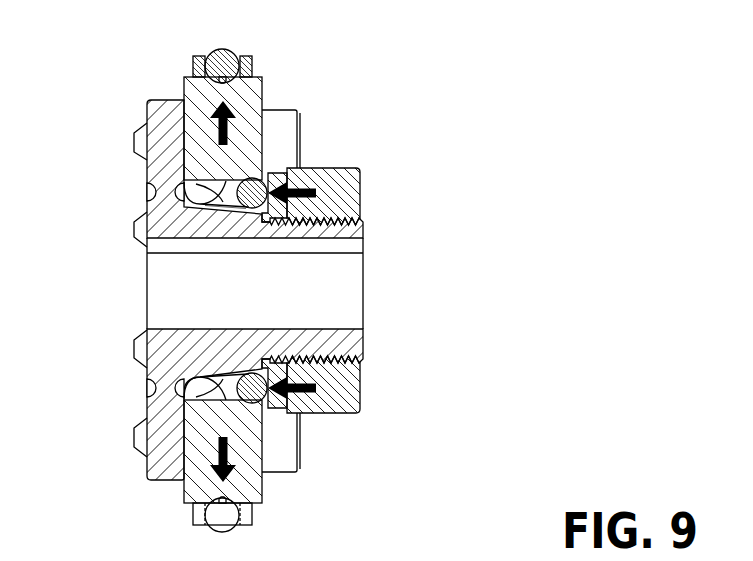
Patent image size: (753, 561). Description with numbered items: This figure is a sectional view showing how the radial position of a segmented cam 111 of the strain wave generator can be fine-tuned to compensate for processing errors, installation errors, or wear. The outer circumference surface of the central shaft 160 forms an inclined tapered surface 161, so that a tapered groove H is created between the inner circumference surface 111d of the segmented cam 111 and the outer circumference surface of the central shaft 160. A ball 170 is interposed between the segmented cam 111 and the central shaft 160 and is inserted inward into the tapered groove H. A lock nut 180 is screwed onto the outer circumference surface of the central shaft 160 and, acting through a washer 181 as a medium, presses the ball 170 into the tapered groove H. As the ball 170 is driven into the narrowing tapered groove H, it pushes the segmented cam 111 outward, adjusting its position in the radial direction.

The segmented cam 111 is at (250, 93).
The inner circumference surface 111d is at (184, 188).
The inclined tapered surface 161 is at (186, 190).
The ball 170 is at (255, 187).
The lock nut 180 is at (344, 195).
The washer 181 is at (280, 177).
The central shaft 160 is at (345, 346).
The tapered groove H is at (223, 198).